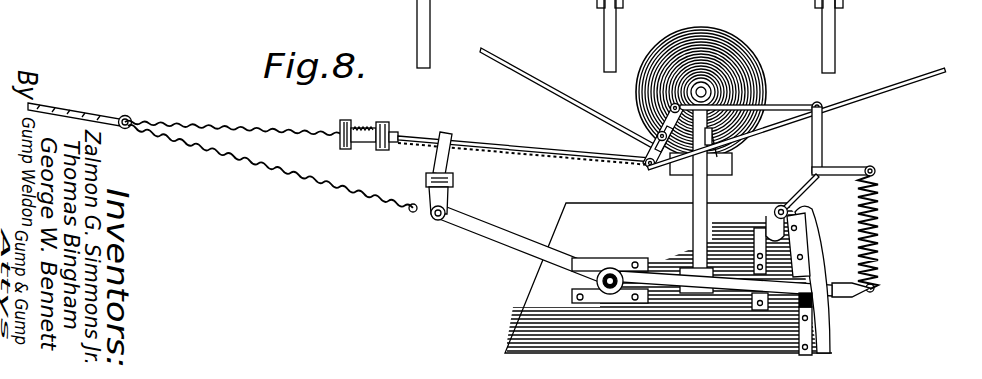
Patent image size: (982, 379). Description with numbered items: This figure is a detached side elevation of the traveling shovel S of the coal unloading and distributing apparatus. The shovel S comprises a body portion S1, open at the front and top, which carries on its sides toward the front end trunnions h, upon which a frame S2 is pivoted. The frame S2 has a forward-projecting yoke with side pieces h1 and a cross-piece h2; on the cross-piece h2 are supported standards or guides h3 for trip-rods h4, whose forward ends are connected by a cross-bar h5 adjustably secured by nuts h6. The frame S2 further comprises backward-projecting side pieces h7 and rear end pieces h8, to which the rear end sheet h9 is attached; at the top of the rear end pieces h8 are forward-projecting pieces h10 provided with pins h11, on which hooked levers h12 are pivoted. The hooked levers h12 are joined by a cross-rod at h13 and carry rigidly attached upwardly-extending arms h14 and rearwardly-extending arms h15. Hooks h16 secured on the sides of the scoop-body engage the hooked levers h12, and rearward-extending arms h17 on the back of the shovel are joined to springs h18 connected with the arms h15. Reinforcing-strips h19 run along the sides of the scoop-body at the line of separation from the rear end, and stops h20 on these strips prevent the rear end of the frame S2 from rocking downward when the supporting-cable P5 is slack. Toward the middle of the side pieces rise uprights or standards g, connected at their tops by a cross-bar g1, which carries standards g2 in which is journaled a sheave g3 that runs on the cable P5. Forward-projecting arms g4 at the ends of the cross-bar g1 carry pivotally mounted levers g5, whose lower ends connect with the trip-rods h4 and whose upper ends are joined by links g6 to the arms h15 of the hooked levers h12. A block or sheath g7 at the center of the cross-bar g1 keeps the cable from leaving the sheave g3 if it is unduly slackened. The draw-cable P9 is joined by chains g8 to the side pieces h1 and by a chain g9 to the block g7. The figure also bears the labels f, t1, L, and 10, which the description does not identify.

The draw-cable P9 is at (83, 114).
The cable P5 is at (907, 82).
The chain g9 is at (240, 128).
The chains g8 is at (303, 177).
The cross-bar h5 is at (357, 122).
The nuts h6 is at (378, 147).
The trip-rods h4 is at (505, 150).
The standards or guides h3 is at (448, 130).
The cross-piece h2 is at (450, 187).
The side pieces h1 is at (472, 233).
The trunnions h is at (608, 270).
The backward-projecting side pieces h7 is at (728, 287).
The rear end pieces h8 is at (820, 267).
The rear end sheet h9 is at (808, 243).
The forward-projecting pieces h10 is at (797, 205).
The pins h11 is at (776, 208).
The hooked levers h12 is at (808, 175).
The cross-rod h13 is at (827, 167).
The upwardly-extending arms h14 is at (860, 122).
The rearwardly-extending arms h15 is at (857, 167).
The hooks h16 is at (753, 263).
The rearward-extending arms h17 is at (853, 295).
The springs h18 is at (873, 238).
The reinforcing-strips h19 is at (802, 330).
The stops h20 is at (812, 300).
The uprights or standards g is at (710, 182).
The cross-bar g1 is at (648, 123).
The standards g2 is at (712, 110).
The sheave g3 is at (718, 106).
The forward-projecting arms g4 is at (670, 160).
The levers g5 is at (650, 147).
The links g6 is at (751, 93).
The block or sheath g7 is at (725, 167).
The shovel S is at (656, 278).
The body portion S1 is at (570, 210).
The frame S2 is at (605, 295).
The post f is at (562, 6).
The post t1 is at (648, 8).
The post L is at (692, 10).
The post 10 is at (730, 7).